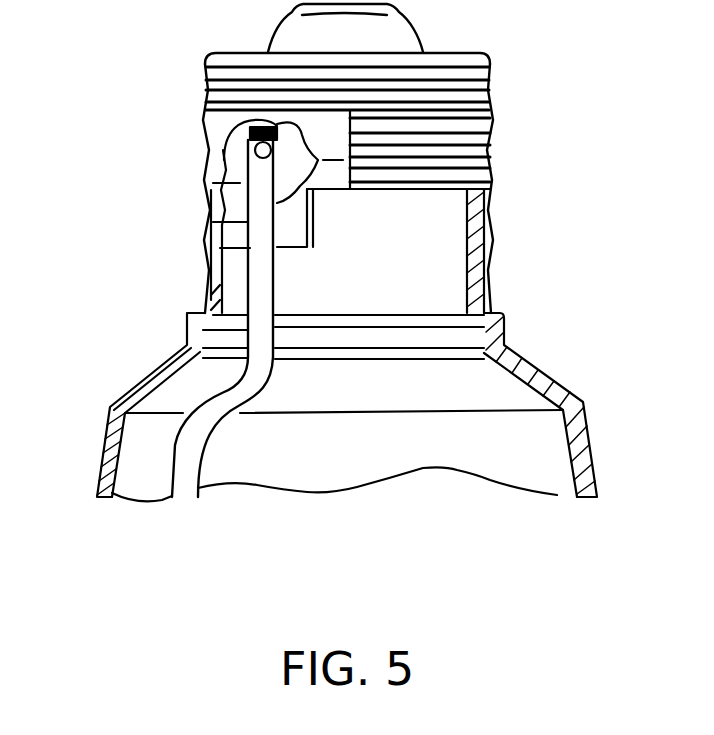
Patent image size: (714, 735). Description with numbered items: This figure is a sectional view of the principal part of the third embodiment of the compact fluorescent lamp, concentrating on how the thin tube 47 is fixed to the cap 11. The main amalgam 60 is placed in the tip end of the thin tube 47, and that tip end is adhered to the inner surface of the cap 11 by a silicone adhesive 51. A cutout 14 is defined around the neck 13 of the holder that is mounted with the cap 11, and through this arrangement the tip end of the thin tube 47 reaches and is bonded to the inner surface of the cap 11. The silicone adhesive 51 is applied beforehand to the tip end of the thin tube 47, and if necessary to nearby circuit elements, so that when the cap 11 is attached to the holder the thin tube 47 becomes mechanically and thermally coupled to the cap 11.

The cap 11 is at (488, 92).
The neck 13 is at (487, 277).
The cutout 14 is at (240, 232).
The thin tube 47 is at (248, 284).
The silicone adhesive 51 is at (237, 182).
The main amalgam 60 is at (257, 147).